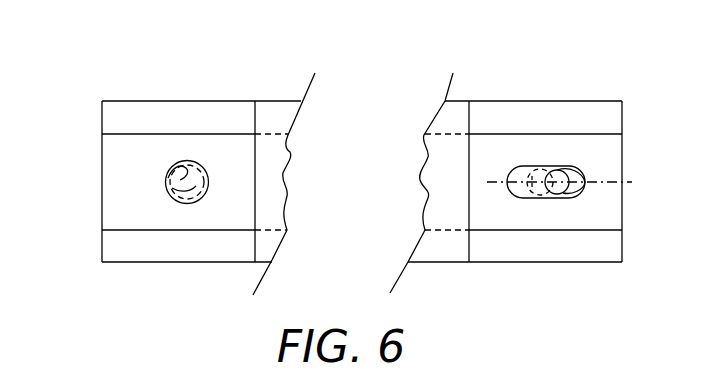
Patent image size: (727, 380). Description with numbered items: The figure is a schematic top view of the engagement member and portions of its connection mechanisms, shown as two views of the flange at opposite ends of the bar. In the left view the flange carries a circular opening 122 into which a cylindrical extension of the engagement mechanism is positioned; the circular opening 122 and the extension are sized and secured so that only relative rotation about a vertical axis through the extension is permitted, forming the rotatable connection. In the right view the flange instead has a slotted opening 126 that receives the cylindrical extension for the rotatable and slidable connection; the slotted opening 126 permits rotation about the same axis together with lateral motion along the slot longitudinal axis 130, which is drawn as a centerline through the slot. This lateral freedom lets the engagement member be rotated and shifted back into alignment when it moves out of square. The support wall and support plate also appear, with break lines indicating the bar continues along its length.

The circular opening 122 is at (168, 178).
The slotted opening 126 is at (583, 177).
The slot longitudinal axis 130 is at (640, 182).